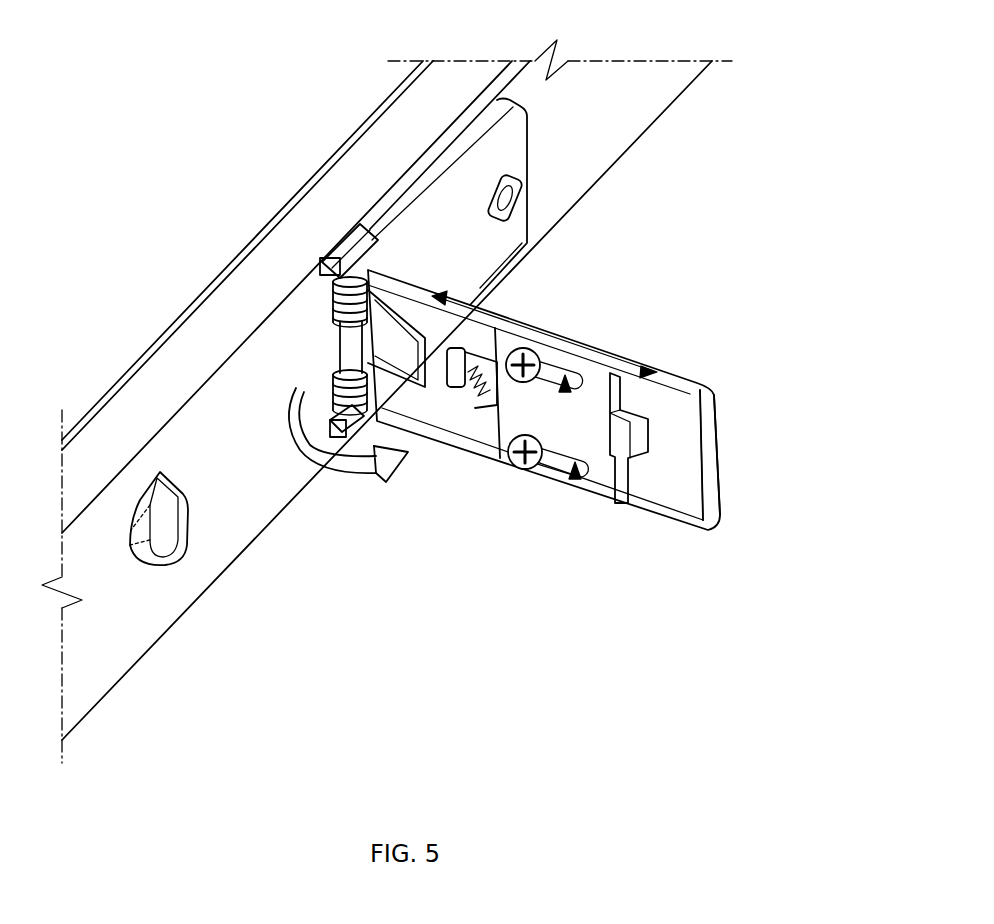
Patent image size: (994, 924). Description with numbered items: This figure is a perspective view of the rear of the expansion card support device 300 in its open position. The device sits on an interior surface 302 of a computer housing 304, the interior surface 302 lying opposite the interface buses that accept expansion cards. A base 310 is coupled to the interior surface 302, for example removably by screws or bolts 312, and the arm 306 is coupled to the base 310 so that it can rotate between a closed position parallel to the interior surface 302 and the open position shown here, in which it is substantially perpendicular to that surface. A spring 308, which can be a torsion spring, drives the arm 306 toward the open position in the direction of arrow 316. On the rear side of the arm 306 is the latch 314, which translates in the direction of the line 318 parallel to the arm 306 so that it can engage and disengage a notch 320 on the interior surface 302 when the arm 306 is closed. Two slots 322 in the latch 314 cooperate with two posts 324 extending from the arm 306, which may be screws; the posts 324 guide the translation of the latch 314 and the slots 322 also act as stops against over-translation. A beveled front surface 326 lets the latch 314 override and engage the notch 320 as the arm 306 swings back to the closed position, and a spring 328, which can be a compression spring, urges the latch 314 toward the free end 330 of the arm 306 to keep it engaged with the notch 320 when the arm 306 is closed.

The expansion card support device 300 is at (471, 575).
The interior surface 302 is at (142, 583).
The computer housing 304 is at (199, 172).
The arm 306 is at (672, 417).
The spring 308 is at (353, 233).
The base 310 is at (457, 200).
The screws or bolts 312 is at (510, 173).
The latch 314 is at (503, 420).
The arrow 316 is at (358, 485).
The line 318 is at (583, 343).
The notch 320 is at (163, 503).
The slots 322 is at (564, 393).
The posts 324 is at (536, 435).
The beveled front surface 326 is at (650, 423).
The spring 328 is at (472, 400).
The free end 330 is at (712, 448).